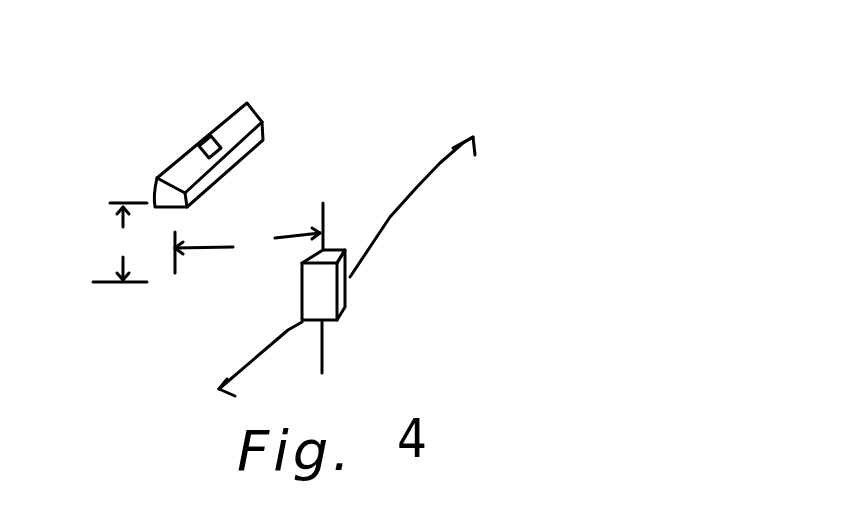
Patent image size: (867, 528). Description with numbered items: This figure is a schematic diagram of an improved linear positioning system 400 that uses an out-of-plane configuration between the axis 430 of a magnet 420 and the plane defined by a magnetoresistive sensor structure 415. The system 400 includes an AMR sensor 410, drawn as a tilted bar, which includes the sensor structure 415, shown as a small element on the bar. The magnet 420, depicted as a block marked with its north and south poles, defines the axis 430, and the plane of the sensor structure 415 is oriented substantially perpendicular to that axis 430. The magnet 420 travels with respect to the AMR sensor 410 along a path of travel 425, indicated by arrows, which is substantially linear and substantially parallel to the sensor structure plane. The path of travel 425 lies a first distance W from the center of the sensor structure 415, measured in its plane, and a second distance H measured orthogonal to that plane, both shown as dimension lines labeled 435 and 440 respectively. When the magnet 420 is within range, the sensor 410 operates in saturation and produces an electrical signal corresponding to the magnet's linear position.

The system 400 is at (607, 137).
The AMR sensor 410 is at (240, 116).
The sensor structure 415 is at (208, 138).
The magnet 420 is at (350, 322).
The path of travel 425 is at (418, 208).
The axis 430 is at (340, 370).
The width W 435 is at (266, 253).
The height H 440 is at (108, 238).